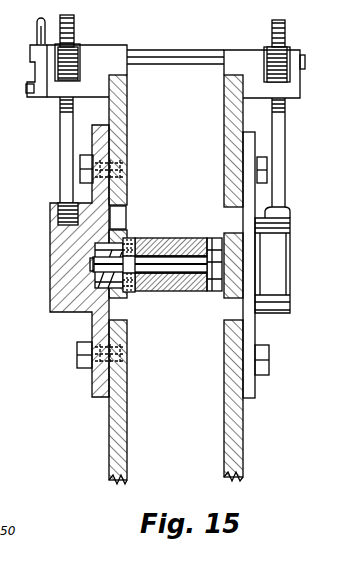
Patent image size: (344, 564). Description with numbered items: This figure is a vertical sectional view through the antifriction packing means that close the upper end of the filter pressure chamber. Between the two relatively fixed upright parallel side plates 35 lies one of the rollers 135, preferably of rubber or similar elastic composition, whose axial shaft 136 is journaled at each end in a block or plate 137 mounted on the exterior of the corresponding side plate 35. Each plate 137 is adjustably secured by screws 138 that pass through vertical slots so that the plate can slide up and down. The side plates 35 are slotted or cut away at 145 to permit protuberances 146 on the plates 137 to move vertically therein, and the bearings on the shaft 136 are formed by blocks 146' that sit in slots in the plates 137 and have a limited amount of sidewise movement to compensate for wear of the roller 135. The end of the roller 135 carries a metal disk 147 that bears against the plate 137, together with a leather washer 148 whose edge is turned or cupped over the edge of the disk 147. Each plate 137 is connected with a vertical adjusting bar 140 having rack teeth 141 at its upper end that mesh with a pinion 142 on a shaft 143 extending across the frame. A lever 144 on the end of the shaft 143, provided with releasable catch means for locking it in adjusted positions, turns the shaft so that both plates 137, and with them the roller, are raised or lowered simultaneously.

The side plate 35 is at (126, 462).
The roller 135 is at (182, 292).
The axial shaft 136 is at (227, 235).
The block or plate 137 is at (73, 303).
The screw 138 is at (126, 168).
The vertical adjusting bar 140 is at (65, 128).
The rack teeth 141 is at (286, 40).
The pinion 142 is at (78, 45).
The shaft 143 is at (175, 50).
The lever 144 is at (37, 33).
The slot 145 is at (225, 311).
The protuberance 146 is at (137, 217).
The block 146' is at (172, 263).
The metal disk 147 is at (133, 292).
The leather washer 148 is at (132, 287).